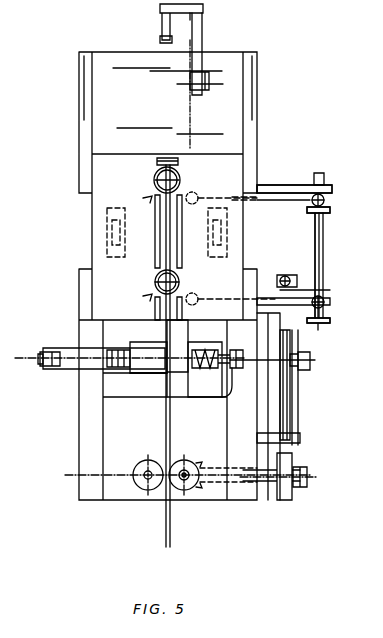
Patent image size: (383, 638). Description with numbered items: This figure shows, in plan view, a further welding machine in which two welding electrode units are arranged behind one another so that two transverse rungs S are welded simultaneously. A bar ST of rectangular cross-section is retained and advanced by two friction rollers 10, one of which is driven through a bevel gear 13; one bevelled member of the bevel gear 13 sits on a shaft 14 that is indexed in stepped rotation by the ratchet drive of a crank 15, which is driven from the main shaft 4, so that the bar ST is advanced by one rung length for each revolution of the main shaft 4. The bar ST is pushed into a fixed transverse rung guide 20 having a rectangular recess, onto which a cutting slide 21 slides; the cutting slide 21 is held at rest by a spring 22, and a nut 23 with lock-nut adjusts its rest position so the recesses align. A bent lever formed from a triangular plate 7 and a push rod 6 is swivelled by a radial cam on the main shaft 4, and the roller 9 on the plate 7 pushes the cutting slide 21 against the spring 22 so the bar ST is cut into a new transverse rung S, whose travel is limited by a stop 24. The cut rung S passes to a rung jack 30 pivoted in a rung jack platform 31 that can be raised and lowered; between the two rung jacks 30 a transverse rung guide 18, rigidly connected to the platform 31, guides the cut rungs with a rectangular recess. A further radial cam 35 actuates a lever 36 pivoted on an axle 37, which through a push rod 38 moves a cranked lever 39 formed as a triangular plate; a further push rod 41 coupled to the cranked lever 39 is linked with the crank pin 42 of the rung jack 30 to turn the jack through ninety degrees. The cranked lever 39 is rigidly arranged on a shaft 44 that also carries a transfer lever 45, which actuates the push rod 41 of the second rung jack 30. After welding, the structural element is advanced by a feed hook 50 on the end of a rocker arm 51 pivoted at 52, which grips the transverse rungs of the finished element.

The main shaft 4 is at (272, 370).
The push rod 6 is at (40, 364).
The triangular plate 7 is at (70, 366).
The roller 9 is at (120, 368).
The friction rollers 10 is at (148, 460).
The bevel gear 13 is at (197, 464).
The shaft 14 is at (270, 490).
The crank 15 is at (302, 488).
The transverse rung guide 18 is at (155, 243).
The transverse rung guide 20 is at (176, 326).
The cutting slide 21 is at (148, 385).
The spring 22 is at (215, 369).
The nut 23 is at (232, 390).
The stop 24 is at (180, 166).
The rung jack 30 is at (181, 185).
The rung jack platform 31 is at (118, 289).
The radial cam 35 is at (291, 380).
The lever 36 is at (298, 412).
The axle 37 is at (300, 434).
The push rod 38 is at (294, 254).
The cranked lever 39 is at (300, 292).
The push rod 41 is at (282, 200).
The crank pin 42 is at (143, 198).
The shaft 44 is at (324, 247).
The transfer lever 45 is at (331, 210).
The feed hook 50 is at (160, 28).
The rocker arm 51 is at (203, 34).
The pivot 52 is at (206, 86).
The transverse rung S is at (167, 338).
The bar ST is at (171, 536).